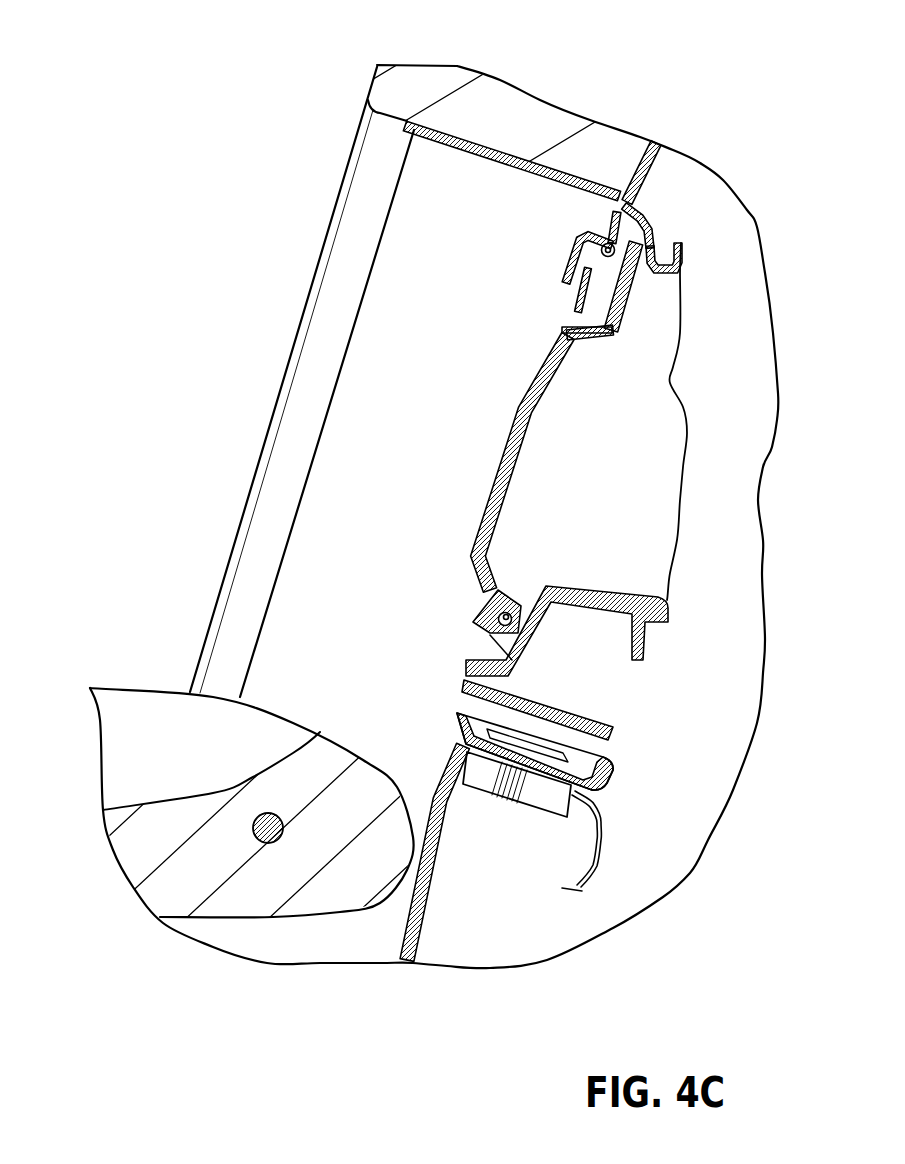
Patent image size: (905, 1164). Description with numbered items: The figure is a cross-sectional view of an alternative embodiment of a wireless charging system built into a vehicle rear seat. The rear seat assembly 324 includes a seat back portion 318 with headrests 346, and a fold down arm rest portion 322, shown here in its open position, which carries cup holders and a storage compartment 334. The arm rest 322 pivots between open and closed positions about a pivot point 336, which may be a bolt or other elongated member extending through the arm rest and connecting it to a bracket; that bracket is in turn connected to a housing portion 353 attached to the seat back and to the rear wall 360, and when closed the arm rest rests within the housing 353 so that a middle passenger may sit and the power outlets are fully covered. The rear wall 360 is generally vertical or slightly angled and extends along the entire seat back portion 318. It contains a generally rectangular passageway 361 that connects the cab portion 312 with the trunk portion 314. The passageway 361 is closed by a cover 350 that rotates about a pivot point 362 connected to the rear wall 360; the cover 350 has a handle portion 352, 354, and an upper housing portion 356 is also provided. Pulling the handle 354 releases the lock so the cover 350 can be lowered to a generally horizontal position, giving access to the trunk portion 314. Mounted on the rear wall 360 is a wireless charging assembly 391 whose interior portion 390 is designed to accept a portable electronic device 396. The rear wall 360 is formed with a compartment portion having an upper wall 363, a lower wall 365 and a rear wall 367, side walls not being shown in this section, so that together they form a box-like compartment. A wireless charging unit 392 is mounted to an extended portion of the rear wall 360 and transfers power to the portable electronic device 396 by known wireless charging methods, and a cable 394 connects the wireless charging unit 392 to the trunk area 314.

The cab portion 312 is at (126, 560).
The trunk portion 314 is at (723, 623).
The seat back portion 318 is at (318, 943).
The fold down arm rest portion 322 is at (135, 855).
The rear seat assembly 324 is at (174, 415).
The storage compartment 334 is at (124, 713).
The pivot point 336 is at (262, 843).
The headrests 346 is at (552, 127).
The cover 350 is at (528, 587).
The handle portion 352 is at (570, 263).
The housing portion 353 is at (322, 548).
The handle 354 is at (568, 318).
The upper housing portion 356 is at (453, 140).
The rear wall 360 is at (422, 903).
The passageway 361 is at (645, 465).
The pivot point 362 is at (508, 613).
The upper wall 363 is at (500, 756).
The lower wall 365 is at (552, 707).
The rear wall 367 is at (612, 758).
The interior portion 390 is at (572, 735).
The wireless charging assembly 391 is at (611, 779).
The wireless charging unit 392 is at (545, 793).
The cable 394 is at (593, 865).
The portable electronic device 396 is at (613, 772).